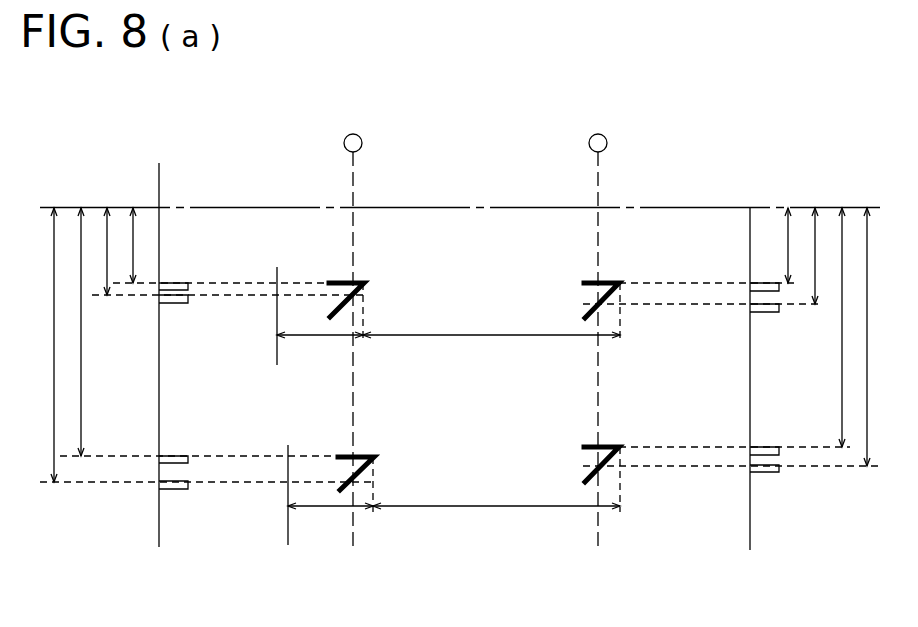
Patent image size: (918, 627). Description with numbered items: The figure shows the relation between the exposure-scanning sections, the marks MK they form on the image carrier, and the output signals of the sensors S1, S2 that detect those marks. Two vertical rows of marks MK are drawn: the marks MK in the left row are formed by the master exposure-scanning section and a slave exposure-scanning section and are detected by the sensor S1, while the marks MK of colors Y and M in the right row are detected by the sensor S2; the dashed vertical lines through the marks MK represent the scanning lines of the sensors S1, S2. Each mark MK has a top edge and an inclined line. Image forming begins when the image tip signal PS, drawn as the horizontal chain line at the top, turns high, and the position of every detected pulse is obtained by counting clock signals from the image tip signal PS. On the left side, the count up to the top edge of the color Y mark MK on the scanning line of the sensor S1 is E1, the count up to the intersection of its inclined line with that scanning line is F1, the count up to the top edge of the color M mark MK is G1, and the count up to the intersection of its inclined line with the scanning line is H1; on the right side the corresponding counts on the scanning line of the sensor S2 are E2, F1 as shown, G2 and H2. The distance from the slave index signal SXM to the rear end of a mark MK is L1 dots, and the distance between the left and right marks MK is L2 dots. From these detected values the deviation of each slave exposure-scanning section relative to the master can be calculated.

The image tip signal PS is at (714, 208).
The sensor S1 is at (353, 330).
The sensor S2 is at (598, 330).
The mark MK is at (498, 356).
The slave index signal SXM is at (288, 518).
The number of clocks counted up to the intersection of the inclined line of mark of H1 is at (60, 345).
The number of clocks counted up to the top edge of mark of color M G1 is at (87, 332).
The number of clocks counted up to the intersection of the inclined line of mark of F1 is at (462, 256).
The number of clocks counted up to the top edge of mark of color Y E1 is at (133, 245).
The number of clocks counted up to the top edge of mark of color Y on the scanning l E2 is at (789, 245).
The number of clocks counted up to the top edge of mark of color M on the scanning l G2 is at (844, 327).
The number of clocks counted up to the intersection of the inclined line of mark of H2 is at (870, 337).
The distance from each index signal to the rear end of mark L1 is at (325, 404).
The distance between two marks located on the right and left L2 is at (491, 437).